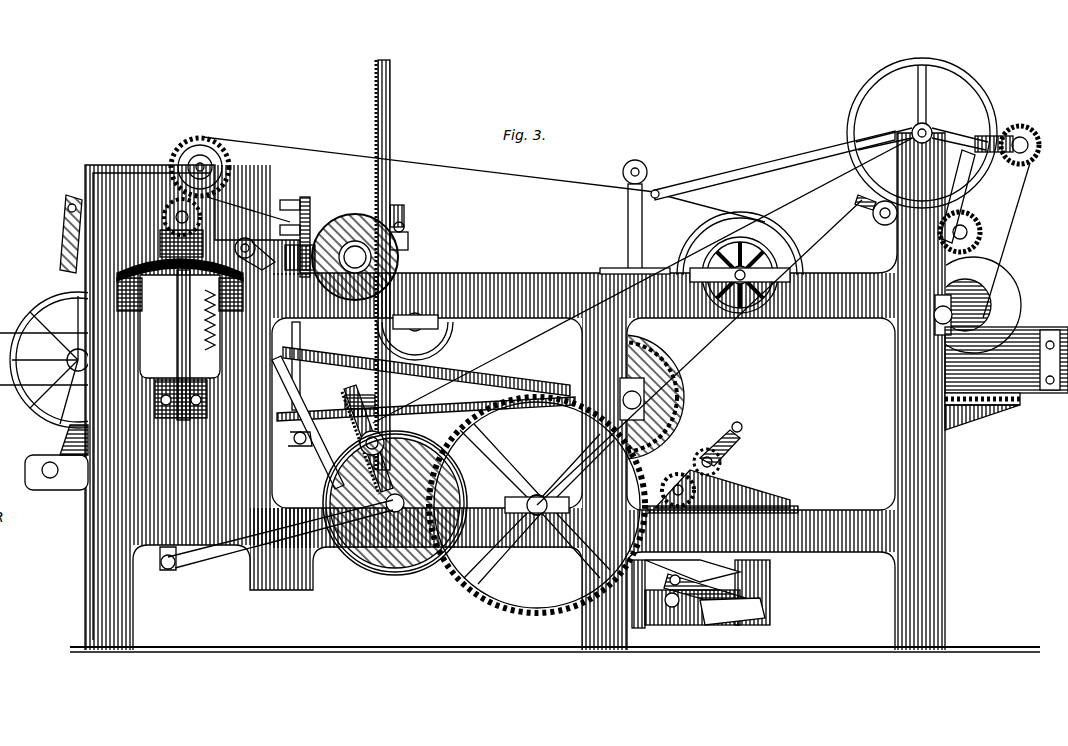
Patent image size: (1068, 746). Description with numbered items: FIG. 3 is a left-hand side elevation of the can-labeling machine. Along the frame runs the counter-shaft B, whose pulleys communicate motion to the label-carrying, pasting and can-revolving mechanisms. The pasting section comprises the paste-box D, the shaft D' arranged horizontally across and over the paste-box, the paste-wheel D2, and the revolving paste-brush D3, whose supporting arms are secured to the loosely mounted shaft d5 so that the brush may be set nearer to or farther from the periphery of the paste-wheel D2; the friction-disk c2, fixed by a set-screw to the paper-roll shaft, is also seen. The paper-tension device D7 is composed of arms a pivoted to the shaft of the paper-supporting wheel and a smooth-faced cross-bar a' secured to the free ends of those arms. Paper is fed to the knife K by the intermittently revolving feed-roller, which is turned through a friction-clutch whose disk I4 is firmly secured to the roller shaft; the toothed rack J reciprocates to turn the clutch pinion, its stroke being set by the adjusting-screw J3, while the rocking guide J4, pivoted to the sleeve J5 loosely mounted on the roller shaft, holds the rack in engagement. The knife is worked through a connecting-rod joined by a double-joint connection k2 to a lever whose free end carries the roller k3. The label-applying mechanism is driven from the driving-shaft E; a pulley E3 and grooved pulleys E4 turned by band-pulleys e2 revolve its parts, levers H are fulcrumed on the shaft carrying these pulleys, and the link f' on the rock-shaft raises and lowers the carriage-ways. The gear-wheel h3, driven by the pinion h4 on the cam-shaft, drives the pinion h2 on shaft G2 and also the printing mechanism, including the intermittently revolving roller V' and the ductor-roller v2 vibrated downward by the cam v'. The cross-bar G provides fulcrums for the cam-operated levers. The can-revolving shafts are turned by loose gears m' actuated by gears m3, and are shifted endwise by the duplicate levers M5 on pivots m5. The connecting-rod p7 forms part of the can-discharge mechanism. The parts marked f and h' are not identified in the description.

The lever f is at (57, 234).
The gear m3 is at (216, 171).
The loose gear m' is at (225, 227).
The lever M5 is at (175, 340).
The pivot m5 is at (208, 382).
The band-pulley e2 is at (255, 244).
The knife K is at (298, 241).
The toothed rack J is at (377, 202).
The rocking guide J4 is at (404, 210).
The adjusting-screw J3 is at (408, 234).
The clutch disk I4 is at (355, 257).
The driving-shaft E is at (440, 328).
The grooved pulley E4 is at (440, 350).
The lever H is at (281, 338).
The paper-tension device D7 is at (426, 402).
The sleeve J5 is at (404, 430).
The double-joint connection k2 is at (295, 425).
The roller k3 is at (302, 446).
The disk h' is at (395, 512).
The pinion h4 is at (405, 575).
The cross-bar G is at (546, 483).
The shaft G2 is at (650, 398).
The gear-wheel h3 is at (684, 470).
The pinion h2 is at (695, 416).
The counter-shaft B is at (776, 283).
The cross-bar a' is at (640, 213).
The arm a is at (484, 179).
The connecting-rod p7 is at (773, 165).
The friction-disk c2 is at (968, 192).
The shaft d5 is at (878, 220).
The paste-brush D3 is at (978, 234).
The paste-wheel D2 is at (1000, 298).
The shaft D' is at (991, 315).
The paste-box D is at (1006, 378).
The link f' is at (159, 559).
The pulley E3 is at (215, 556).
The roller V' is at (686, 602).
The cam v' is at (722, 590).
The ductor-roller v2 is at (733, 612).